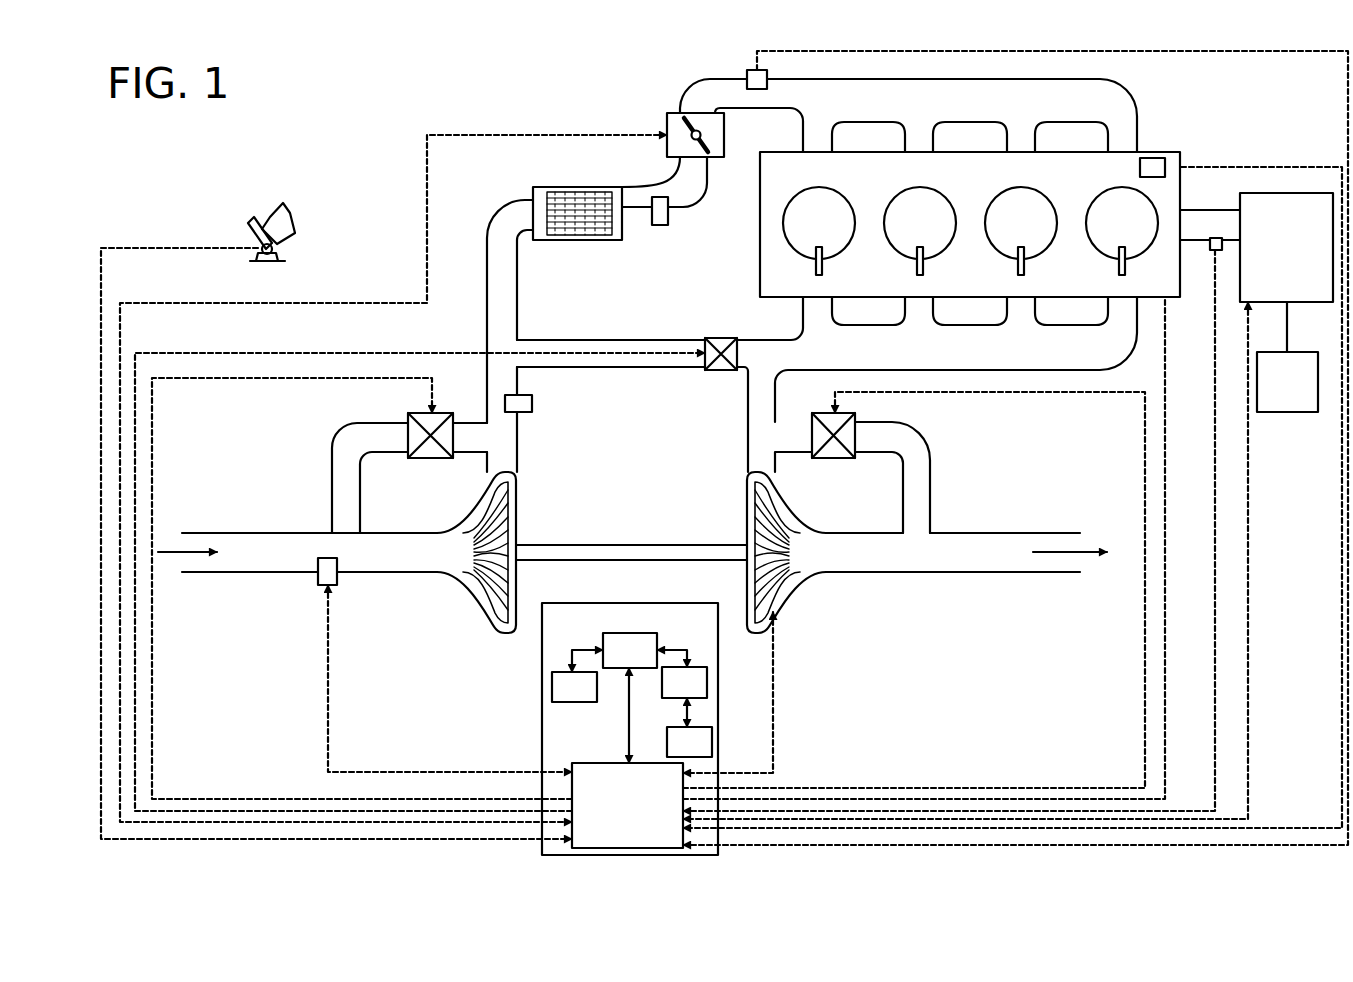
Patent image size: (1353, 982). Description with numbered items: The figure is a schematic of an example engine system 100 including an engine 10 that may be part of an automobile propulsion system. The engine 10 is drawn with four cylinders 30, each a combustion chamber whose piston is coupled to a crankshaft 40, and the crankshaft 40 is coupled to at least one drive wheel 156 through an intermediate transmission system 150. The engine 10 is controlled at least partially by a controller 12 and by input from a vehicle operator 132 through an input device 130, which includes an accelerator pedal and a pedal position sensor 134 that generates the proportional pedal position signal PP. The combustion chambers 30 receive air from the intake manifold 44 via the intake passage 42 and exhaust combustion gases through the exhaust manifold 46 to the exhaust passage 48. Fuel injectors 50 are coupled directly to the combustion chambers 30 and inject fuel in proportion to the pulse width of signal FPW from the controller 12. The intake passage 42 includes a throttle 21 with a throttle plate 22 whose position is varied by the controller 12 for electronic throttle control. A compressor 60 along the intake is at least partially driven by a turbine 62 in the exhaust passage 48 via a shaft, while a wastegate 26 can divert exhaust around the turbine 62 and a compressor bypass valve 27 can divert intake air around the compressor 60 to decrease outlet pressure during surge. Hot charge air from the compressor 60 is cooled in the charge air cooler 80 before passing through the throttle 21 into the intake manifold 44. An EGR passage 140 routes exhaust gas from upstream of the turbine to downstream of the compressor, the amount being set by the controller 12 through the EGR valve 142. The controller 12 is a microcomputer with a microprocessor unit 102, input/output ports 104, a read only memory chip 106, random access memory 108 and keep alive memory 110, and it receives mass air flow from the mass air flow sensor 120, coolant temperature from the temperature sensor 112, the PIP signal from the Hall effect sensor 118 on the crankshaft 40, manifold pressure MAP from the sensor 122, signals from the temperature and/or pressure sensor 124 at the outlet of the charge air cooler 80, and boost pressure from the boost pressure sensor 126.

The engine system 100 is at (362, 144).
The engine 10 is at (1070, 178).
The controller 12 is at (584, 743).
The throttle 21 is at (680, 113).
The throttle plate 22 is at (712, 148).
The wastegate 26 is at (855, 423).
The compressor bypass valve 27 is at (408, 422).
The cylinder 30 is at (1132, 233).
The crankshaft 40 is at (1200, 209).
The intake passage 42 is at (242, 561).
The intake manifold 44 is at (852, 110).
The exhaust manifold 46 is at (823, 360).
The exhaust passage 48 is at (898, 562).
The fuel injector 50 is at (945, 269).
The compressor 60 is at (475, 593).
The turbine 62 is at (785, 506).
The charge air cooler 80 is at (533, 188).
The microprocessor unit 102 is at (603, 645).
The input/output ports 104 is at (669, 838).
The read only memory chip 106 is at (552, 697).
The random access memory 108 is at (707, 669).
The keep alive memory 110 is at (712, 728).
The temperature sensor 112 is at (1155, 158).
The Hall effect sensor 118 is at (1213, 252).
The mass air flow sensor 120 is at (337, 573).
The manifold pressure sensor 122 is at (748, 72).
The temperature and/or pressure sensor 124 is at (660, 226).
The boost pressure sensor 126 is at (533, 405).
The input device 130 is at (250, 228).
The vehicle operator 132 is at (300, 215).
The pedal position sensor 134 is at (276, 250).
The EGR passage 140 is at (613, 339).
The EGR valve 142 is at (723, 337).
The transmission system 150 is at (1303, 233).
The drive wheel 156 is at (1303, 391).